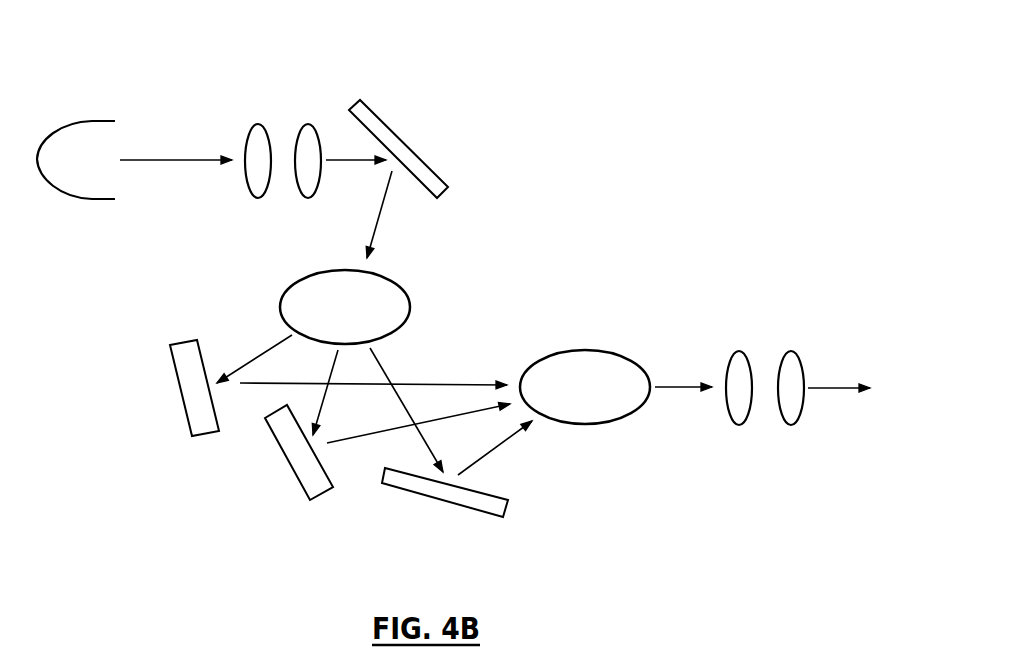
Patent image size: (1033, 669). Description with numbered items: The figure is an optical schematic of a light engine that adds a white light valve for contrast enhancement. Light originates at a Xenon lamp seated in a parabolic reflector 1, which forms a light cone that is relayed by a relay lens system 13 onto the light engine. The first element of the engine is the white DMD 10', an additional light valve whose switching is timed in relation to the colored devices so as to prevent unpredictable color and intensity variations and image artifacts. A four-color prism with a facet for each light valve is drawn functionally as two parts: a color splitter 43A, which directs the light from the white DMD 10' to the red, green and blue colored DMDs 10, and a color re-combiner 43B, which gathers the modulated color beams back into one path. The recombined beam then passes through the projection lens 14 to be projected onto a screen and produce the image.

The parabolic reflector 1 is at (92, 119).
The relay lens system 13 is at (280, 112).
The white DMD 10' is at (391, 137).
The color splitter 43A is at (416, 303).
The colored DMDs 10 is at (338, 433).
The color re-combiner 43B is at (635, 358).
The projection lens 14 is at (765, 422).